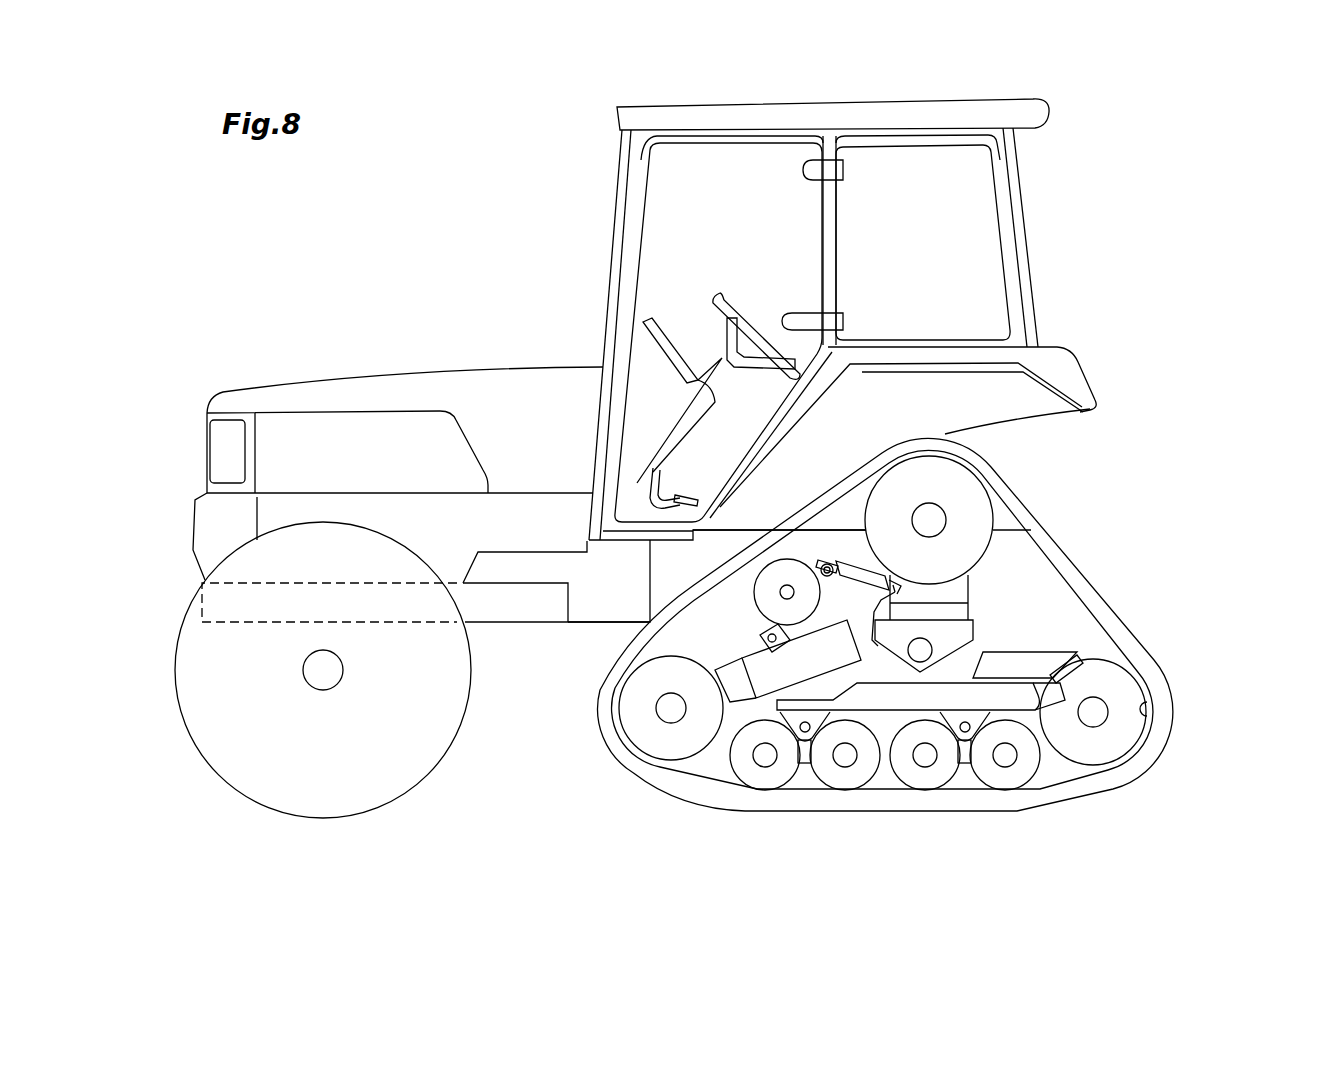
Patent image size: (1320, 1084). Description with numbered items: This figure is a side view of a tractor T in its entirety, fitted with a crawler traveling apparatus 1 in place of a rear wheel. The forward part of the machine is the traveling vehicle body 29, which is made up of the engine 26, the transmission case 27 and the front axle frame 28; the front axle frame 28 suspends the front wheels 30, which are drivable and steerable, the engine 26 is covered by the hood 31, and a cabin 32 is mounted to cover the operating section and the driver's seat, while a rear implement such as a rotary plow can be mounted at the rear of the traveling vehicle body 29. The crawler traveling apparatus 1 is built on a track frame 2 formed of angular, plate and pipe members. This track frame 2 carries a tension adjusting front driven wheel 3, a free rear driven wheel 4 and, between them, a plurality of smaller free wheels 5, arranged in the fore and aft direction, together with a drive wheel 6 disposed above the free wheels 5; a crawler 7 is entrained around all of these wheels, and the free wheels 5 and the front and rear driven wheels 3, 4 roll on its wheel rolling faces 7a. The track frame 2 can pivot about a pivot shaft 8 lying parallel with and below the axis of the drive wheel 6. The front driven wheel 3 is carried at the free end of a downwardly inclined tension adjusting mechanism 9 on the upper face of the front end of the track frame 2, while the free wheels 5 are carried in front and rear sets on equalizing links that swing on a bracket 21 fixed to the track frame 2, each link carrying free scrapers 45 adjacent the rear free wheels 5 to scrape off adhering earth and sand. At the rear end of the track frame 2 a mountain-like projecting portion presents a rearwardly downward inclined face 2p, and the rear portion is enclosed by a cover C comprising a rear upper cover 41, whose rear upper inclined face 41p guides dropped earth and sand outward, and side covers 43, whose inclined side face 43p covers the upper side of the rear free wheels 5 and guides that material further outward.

The tractor T is at (538, 155).
The crawler traveling apparatus 1 is at (893, 662).
The track frame 2 is at (780, 717).
The inclined face 2p is at (1085, 656).
The front driven wheel 3 is at (633, 717).
The rear driven wheel 4 is at (1127, 737).
The free wheel 5 is at (833, 786).
The drive wheel 6 is at (970, 503).
The crawler 7 is at (1153, 678).
The wheel rolling face 7a is at (1142, 710).
The pivot shaft 8 is at (921, 648).
The tension adjusting mechanism 9 is at (763, 672).
The bracket 21 is at (797, 724).
The engine 26 is at (563, 567).
The transmission case 27 is at (727, 547).
The front axle frame 28 is at (477, 610).
The traveling vehicle body 29 is at (600, 630).
The front wheel 30 is at (412, 790).
The hood 31 is at (521, 380).
The cabin 32 is at (602, 201).
The rear upper cover 41 is at (1022, 651).
The rear upper inclined face 41p is at (1040, 662).
The side cover 43 is at (1010, 720).
The inclined side face 43p is at (1041, 667).
The free scraper 45 is at (797, 748).
The cover C is at (1007, 637).